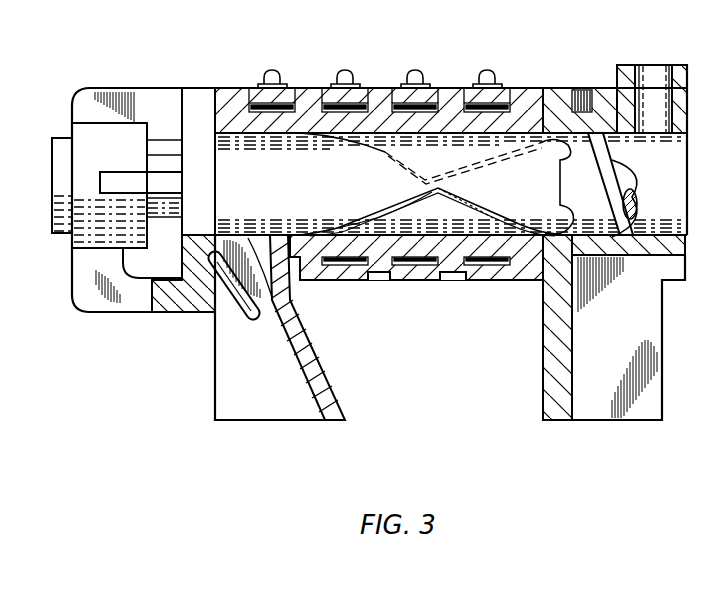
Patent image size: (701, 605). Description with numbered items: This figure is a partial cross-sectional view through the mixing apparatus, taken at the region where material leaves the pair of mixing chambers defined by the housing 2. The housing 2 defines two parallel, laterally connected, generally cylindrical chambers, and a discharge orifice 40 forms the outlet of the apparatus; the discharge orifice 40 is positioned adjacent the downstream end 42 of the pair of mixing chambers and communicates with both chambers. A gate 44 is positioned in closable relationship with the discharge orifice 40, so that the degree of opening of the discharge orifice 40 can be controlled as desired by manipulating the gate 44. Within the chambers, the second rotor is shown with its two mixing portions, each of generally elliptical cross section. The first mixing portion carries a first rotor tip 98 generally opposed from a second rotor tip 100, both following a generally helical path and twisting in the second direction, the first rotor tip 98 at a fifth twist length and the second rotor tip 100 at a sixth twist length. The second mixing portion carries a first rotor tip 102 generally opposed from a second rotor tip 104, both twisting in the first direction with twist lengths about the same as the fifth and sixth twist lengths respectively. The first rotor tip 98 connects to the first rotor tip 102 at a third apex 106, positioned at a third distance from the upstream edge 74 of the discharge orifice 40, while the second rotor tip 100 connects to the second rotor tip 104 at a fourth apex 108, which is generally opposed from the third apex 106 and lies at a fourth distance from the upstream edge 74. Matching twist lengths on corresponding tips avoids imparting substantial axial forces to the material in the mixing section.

The housing 2 is at (382, 88).
The discharge orifice 40 is at (268, 296).
The downstream end 42 is at (221, 166).
The gate 44 is at (213, 313).
The upstream edge 74 is at (272, 292).
The first rotor tip 98 is at (483, 207).
The second rotor tip 100 is at (488, 158).
The first rotor tip 102 is at (368, 223).
The second rotor tip 104 is at (420, 180).
The third apex 106 is at (438, 193).
The fourth apex 108 is at (442, 152).